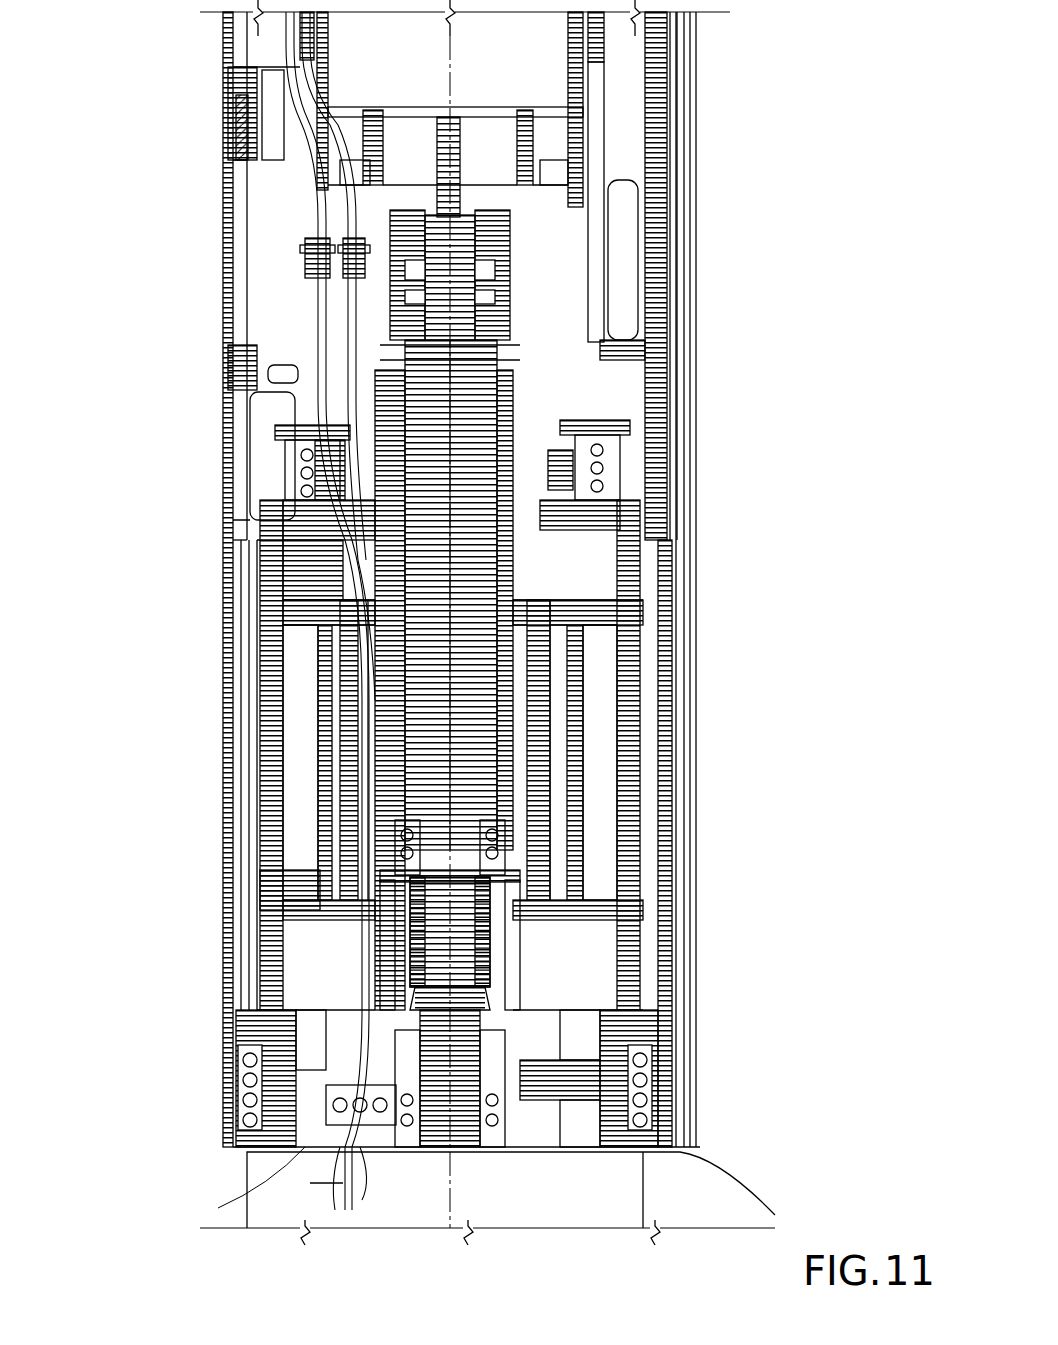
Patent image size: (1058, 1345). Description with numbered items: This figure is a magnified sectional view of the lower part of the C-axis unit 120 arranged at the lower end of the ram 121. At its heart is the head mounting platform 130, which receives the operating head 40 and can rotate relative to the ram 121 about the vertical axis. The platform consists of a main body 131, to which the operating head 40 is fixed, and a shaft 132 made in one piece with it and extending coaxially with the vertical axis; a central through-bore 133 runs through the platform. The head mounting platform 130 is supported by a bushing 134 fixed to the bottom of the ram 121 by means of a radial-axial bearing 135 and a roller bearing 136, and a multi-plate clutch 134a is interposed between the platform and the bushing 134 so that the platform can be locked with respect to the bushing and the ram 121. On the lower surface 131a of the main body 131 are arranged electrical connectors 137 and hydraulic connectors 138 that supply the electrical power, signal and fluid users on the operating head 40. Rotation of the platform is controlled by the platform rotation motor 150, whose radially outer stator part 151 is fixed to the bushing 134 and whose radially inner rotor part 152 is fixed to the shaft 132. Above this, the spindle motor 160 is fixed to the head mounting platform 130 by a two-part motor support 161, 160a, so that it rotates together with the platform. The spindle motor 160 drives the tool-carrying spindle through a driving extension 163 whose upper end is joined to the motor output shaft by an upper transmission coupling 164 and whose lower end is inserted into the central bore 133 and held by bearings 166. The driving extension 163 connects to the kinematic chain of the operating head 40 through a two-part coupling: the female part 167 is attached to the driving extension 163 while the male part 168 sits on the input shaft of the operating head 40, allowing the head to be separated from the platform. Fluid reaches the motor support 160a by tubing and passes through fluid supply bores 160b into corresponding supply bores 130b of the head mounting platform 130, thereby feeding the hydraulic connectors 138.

The operating head 40 is at (770, 1210).
The C-axis unit 120 is at (145, 430).
The ram 121 is at (210, 308).
The head mounting platform 130 is at (220, 1140).
The supply bores 130b is at (560, 695).
The main body 131 is at (692, 1072).
The lower surface 131a is at (330, 1150).
The shaft 132 is at (625, 735).
The central through-bore 133 is at (335, 725).
The bushing 134 is at (590, 800).
The multi-plate clutch 134a is at (655, 545).
The radial-axial bearing 135 is at (662, 1040).
The roller bearing 136 is at (610, 448).
The electrical connectors 137 is at (248, 1060).
The hydraulic connectors 138 is at (652, 1130).
The platform rotation motor 150 is at (560, 760).
The radially outer stator part 151 is at (640, 830).
The radially inner rotor part 152 is at (600, 700).
The spindle motor 160 is at (300, 26).
The motor support 160a is at (612, 197).
The fluid supply bores 160b is at (607, 147).
The motor support part 161 is at (363, 127).
The driving extension 163 is at (312, 680).
The upper transmission coupling 164 is at (513, 277).
The bearings 166 is at (330, 462).
The female part of the coupling 167 is at (590, 870).
The male part of the coupling 168 is at (545, 950).